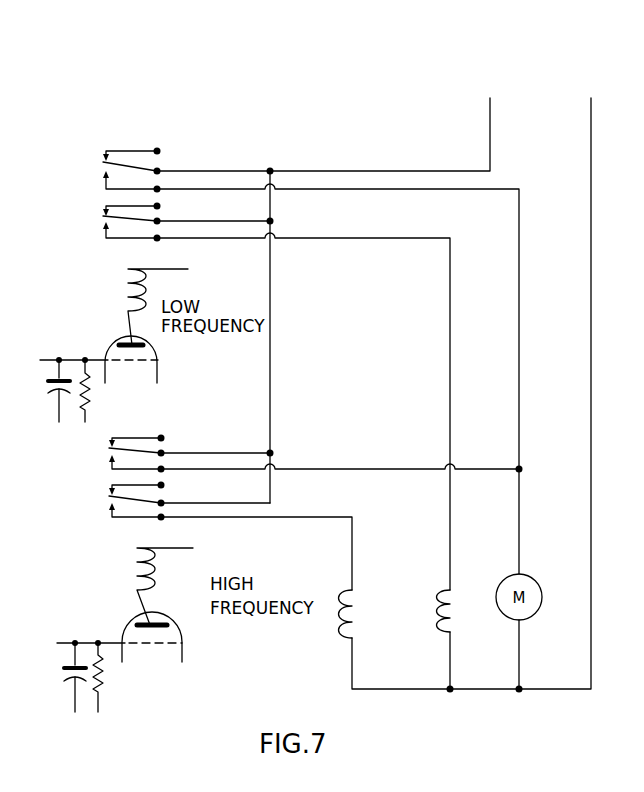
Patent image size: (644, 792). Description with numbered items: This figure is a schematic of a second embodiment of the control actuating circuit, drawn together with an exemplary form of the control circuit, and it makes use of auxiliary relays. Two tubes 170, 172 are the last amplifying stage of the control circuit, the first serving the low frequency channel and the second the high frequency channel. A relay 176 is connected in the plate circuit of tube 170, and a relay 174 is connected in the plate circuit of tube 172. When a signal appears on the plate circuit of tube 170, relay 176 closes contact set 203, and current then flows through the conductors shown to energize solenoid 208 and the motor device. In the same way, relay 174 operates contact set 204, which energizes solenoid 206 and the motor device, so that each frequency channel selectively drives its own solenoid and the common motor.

The contact set 203 is at (100, 203).
The contact set 204 is at (110, 471).
The relay 176 is at (126, 299).
The tube 170 is at (107, 342).
The relay 174 is at (136, 580).
The tube 172 is at (122, 625).
The solenoid 206 is at (362, 613).
The solenoid 208 is at (462, 616).